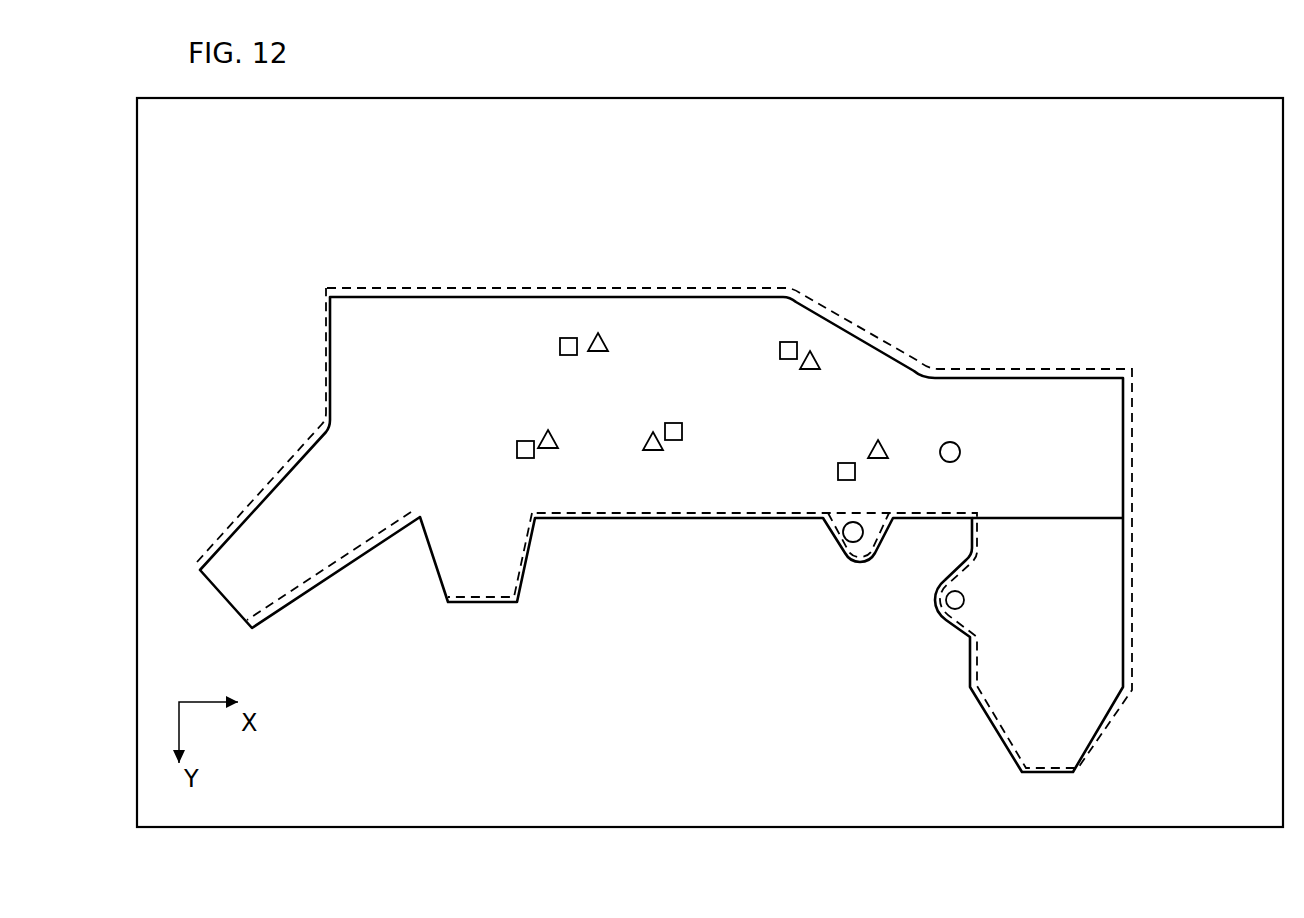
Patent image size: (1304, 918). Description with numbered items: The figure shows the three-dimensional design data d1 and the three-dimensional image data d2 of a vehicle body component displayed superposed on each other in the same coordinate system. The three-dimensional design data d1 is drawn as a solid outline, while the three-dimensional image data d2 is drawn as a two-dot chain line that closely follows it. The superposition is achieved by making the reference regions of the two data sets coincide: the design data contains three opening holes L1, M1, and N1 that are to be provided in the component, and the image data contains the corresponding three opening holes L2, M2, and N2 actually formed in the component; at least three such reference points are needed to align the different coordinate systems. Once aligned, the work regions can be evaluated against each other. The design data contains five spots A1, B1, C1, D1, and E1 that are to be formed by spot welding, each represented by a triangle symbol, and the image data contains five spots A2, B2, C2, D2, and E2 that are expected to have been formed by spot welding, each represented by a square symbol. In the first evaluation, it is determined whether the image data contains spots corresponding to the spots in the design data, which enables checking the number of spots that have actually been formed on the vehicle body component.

The spot A1 is at (609, 329).
The spot A2 is at (568, 325).
The spot B1 is at (823, 348).
The spot B2 is at (794, 329).
The spot C1 is at (550, 461).
The spot C2 is at (525, 471).
The spot D1 is at (652, 462).
The spot D2 is at (676, 454).
The spot E1 is at (880, 473).
The spot E2 is at (836, 489).
The opening hole L1 is at (986, 390).
The opening hole L2 is at (953, 446).
The opening hole M1 is at (835, 591).
The opening hole M2 is at (853, 540).
The opening hole N1 is at (920, 663).
The opening hole N2 is at (957, 606).
The three-dimensional design data d1 is at (1079, 370).
The three-dimensional image data d2 is at (1134, 433).